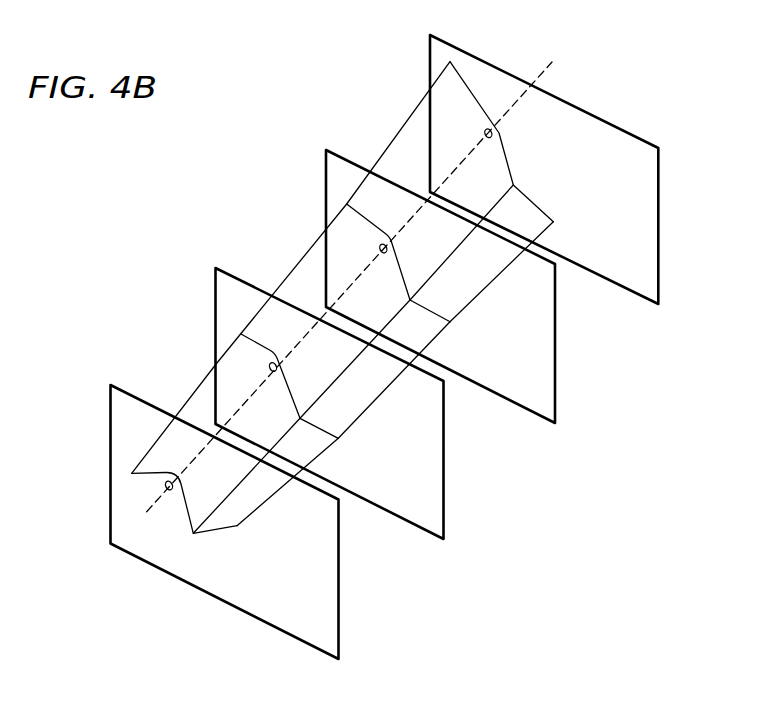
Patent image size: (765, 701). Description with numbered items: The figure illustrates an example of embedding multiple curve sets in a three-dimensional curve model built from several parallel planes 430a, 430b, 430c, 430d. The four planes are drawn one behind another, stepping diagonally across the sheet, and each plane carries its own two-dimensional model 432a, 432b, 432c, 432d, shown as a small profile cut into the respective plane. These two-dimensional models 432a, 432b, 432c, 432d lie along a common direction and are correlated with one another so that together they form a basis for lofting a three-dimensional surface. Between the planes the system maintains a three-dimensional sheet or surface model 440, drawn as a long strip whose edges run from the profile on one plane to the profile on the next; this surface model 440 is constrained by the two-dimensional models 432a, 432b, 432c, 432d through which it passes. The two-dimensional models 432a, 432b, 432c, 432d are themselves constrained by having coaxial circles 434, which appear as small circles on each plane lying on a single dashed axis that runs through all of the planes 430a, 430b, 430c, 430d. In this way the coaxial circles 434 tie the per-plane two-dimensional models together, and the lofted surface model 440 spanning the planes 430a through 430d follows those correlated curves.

The plane 430a is at (309, 600).
The plane 430b is at (424, 480).
The plane 430c is at (530, 355).
The plane 430d is at (636, 246).
The 2D model 432a is at (280, 496).
The 2D model 432b is at (398, 385).
The 2D model 432c is at (510, 282).
The 2D model 432d is at (518, 152).
The coaxial circles 434 is at (625, 52).
The 3D sheet or surface model 440 is at (385, 148).